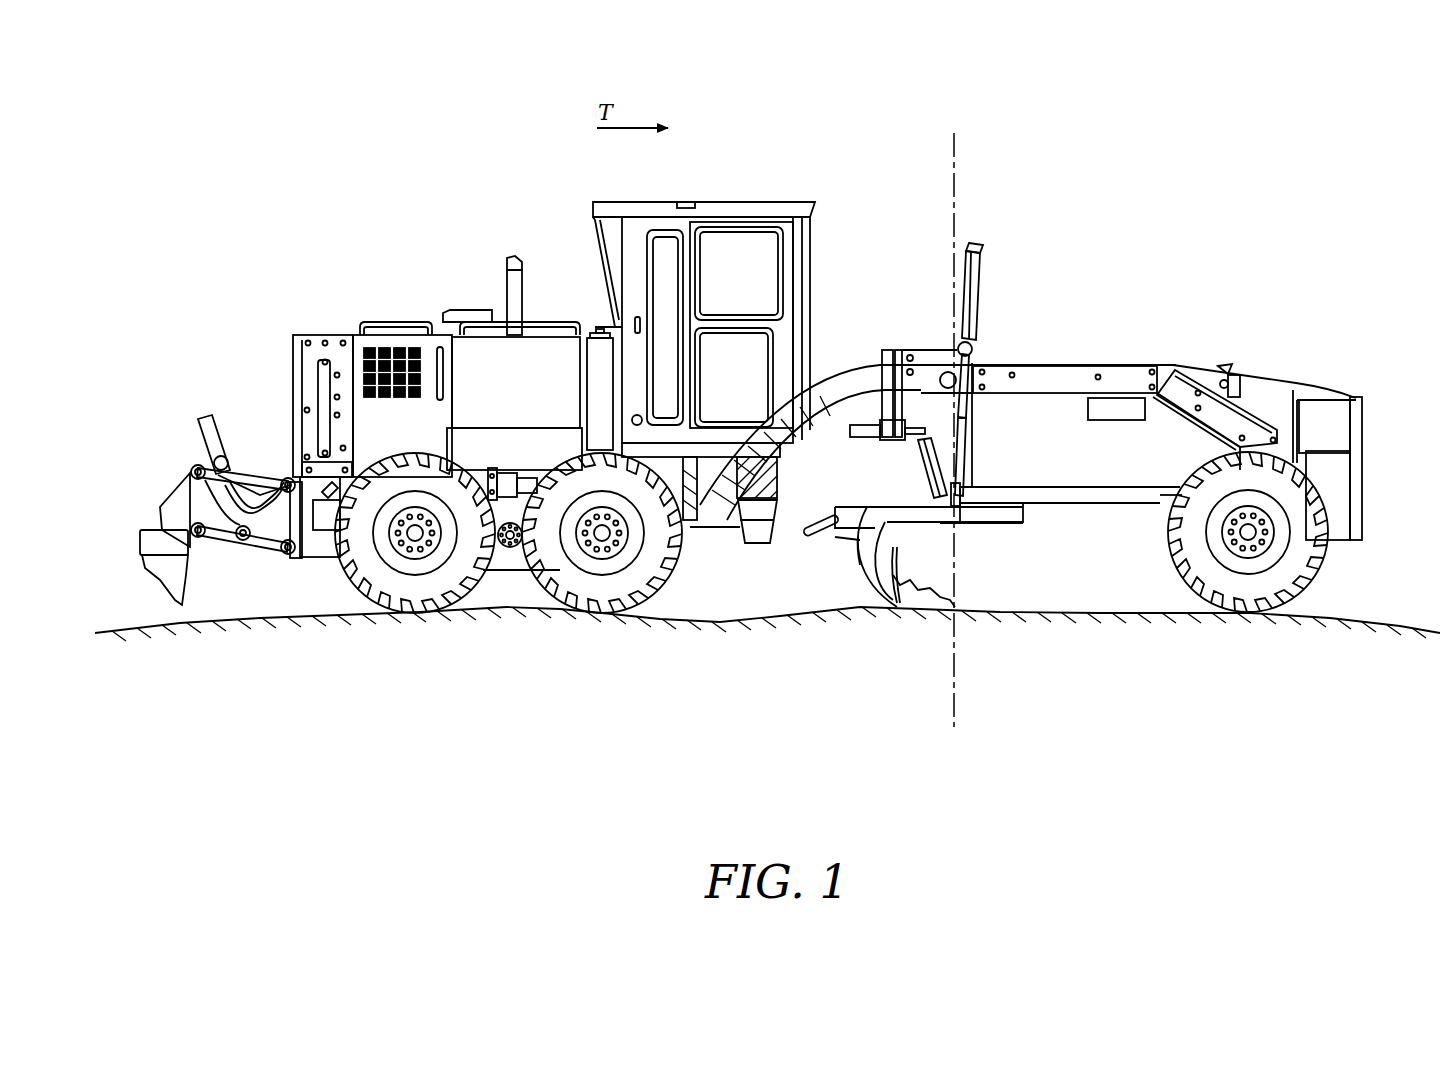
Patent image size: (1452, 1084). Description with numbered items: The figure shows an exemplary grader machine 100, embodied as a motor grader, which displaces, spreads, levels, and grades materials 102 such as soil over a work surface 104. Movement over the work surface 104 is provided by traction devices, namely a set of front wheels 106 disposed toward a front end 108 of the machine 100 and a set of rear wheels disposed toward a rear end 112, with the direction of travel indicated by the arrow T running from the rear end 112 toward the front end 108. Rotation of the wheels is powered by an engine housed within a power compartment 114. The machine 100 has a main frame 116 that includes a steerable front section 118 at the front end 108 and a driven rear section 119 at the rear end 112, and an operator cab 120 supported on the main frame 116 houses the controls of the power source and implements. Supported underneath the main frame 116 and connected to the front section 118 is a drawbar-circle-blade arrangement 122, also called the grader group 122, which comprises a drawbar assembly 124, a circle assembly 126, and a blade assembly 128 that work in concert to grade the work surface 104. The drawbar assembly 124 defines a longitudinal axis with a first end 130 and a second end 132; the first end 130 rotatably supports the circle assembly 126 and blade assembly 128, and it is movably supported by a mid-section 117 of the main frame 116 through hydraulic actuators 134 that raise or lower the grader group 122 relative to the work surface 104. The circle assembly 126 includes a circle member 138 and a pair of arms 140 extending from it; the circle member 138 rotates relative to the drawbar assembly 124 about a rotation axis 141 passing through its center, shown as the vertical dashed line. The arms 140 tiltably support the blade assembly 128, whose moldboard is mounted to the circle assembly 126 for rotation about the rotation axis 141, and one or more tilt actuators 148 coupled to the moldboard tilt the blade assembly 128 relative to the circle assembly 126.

The grader machine 100 is at (1195, 162).
The materials 102 is at (913, 600).
The work surface 104 is at (1350, 622).
The set of front wheels 106 is at (1172, 543).
The front end 108 is at (1350, 386).
The rear end 112 is at (196, 397).
The power compartment 114 is at (472, 352).
The main frame 116 is at (858, 390).
The mid-section 117 is at (993, 358).
The steerable front section 118 is at (1240, 362).
The driven rear section 119 is at (313, 563).
The operator cab 120 is at (733, 250).
The drawbar-circle-blade arrangement 122 is at (902, 496).
The drawbar assembly 124 is at (1048, 488).
The circle assembly 126 is at (826, 549).
The blade assembly 128 is at (898, 560).
The first end 130 is at (968, 466).
The second end 132 is at (1181, 489).
The hydraulic actuators 134 is at (970, 282).
The circle member 138 is at (848, 521).
The pair of arms 140 is at (870, 578).
The rotation axis 141 is at (954, 150).
The tilt actuators 148 is at (842, 546).